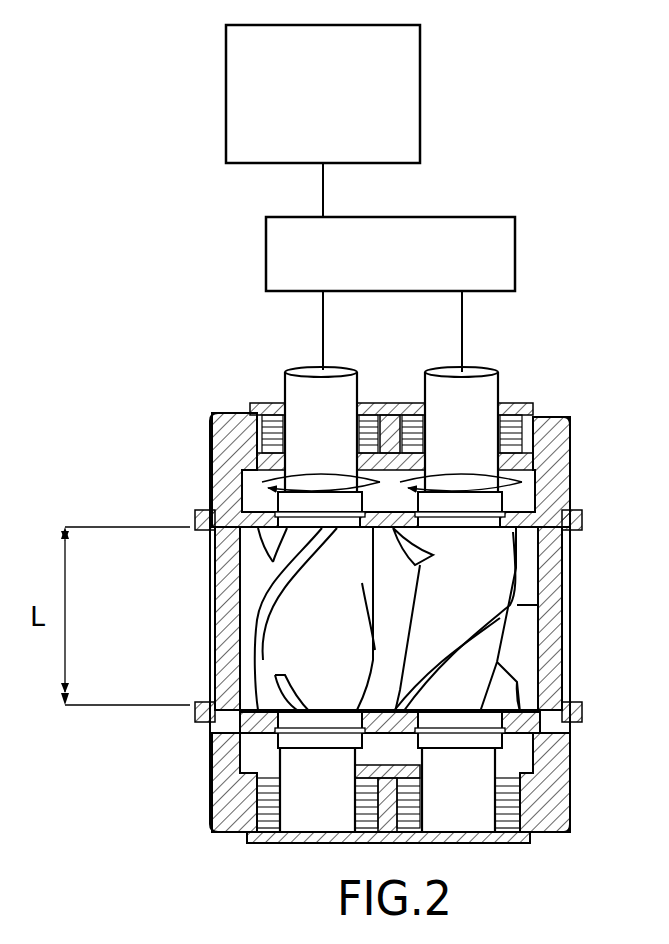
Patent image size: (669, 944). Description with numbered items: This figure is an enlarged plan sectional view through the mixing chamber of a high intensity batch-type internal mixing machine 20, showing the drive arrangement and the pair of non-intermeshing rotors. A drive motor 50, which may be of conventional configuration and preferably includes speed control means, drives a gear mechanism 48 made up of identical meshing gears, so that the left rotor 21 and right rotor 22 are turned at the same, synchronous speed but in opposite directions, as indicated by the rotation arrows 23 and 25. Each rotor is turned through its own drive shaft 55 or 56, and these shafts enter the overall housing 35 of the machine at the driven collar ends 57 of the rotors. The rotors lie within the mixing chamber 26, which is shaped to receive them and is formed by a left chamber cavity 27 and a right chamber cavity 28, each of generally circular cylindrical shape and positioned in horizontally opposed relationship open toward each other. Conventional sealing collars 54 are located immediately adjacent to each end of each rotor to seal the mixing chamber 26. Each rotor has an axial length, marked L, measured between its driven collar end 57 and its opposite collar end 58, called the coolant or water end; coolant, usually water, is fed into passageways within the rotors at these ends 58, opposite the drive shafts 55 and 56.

The internal mixing machine 20 is at (176, 381).
The left rotor 21 is at (257, 618).
The right rotor 22 is at (514, 612).
The rotation arrow 23 is at (266, 491).
The rotation arrow 25 is at (540, 458).
The mixing chamber 26 is at (238, 580).
The left chamber cavity 27 is at (228, 660).
The right chamber cavity 28 is at (545, 650).
The housing 35 is at (579, 420).
The gear mechanism 48 is at (516, 245).
The drive motor 50 is at (421, 118).
The sealing collar 54 is at (280, 493).
The drive shaft 55 is at (298, 380).
The drive shaft 56 is at (487, 378).
The driven collar end 57 is at (246, 532).
The coolant collar end 58 is at (282, 735).